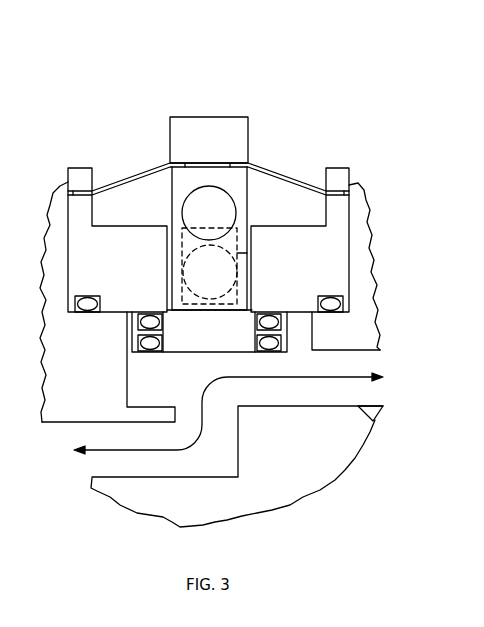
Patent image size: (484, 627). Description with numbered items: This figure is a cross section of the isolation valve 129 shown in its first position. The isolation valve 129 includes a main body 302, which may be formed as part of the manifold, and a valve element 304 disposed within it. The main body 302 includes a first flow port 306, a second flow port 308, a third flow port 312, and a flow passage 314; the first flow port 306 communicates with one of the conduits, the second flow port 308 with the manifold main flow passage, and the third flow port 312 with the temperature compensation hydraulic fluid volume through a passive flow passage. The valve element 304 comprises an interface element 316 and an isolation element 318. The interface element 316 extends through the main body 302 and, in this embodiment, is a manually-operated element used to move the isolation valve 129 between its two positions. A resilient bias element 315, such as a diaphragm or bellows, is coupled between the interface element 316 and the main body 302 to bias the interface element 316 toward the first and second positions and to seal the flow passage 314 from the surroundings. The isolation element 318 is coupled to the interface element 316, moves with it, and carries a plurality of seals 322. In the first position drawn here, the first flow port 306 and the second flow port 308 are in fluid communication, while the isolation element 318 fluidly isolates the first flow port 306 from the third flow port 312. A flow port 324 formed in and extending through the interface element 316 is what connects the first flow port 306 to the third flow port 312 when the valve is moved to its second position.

The isolation valve 129 is at (325, 64).
The main body 302 is at (370, 233).
The valve element 304 is at (304, 135).
The first flow port 306 is at (358, 390).
The second flow port 308 is at (118, 458).
The third flow port 312 is at (193, 278).
The flow passage 314 is at (199, 438).
The resilient bias element 315 is at (122, 182).
The interface element 316 is at (212, 120).
The isolation element 318 is at (178, 352).
The seals 322 is at (268, 353).
The flow port 324 is at (236, 208).